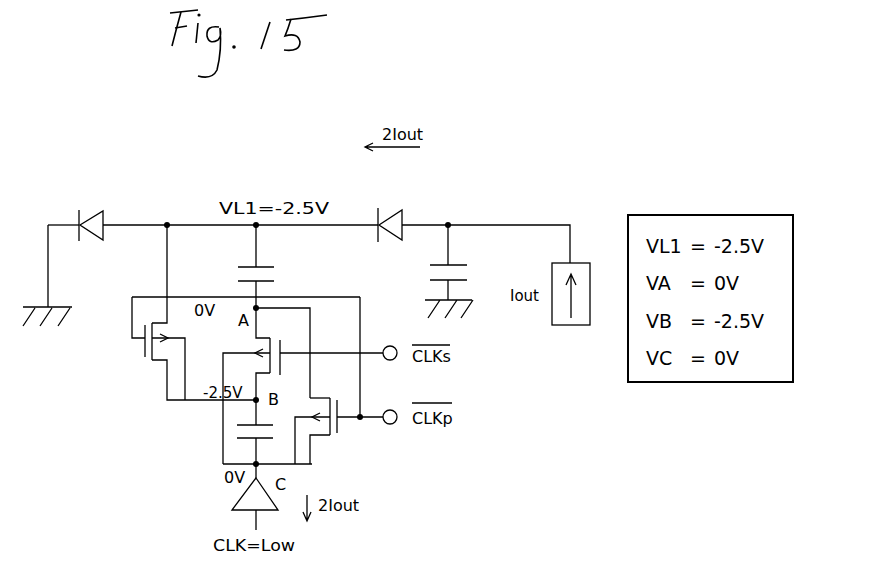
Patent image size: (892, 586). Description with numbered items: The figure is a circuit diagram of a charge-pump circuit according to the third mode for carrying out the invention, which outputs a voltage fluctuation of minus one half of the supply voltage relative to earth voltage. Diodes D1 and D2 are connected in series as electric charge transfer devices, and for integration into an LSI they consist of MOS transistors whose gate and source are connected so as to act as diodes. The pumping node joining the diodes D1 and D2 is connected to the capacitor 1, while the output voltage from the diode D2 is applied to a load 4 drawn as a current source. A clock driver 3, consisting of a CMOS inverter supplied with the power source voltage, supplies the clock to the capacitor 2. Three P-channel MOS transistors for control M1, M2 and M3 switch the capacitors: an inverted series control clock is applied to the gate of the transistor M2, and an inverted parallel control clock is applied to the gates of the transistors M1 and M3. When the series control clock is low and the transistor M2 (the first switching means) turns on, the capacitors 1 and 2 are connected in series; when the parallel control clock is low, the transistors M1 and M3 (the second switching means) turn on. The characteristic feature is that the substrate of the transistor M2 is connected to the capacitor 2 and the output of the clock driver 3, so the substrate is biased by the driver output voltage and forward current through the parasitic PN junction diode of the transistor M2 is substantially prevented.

The capacitor 1 is at (281, 272).
The capacitor 2 is at (236, 434).
The clock driver 3 is at (236, 497).
The load 4 is at (566, 333).
The diode D1 is at (101, 201).
The diode D2 is at (394, 201).
The MOS transistor for control M1 is at (194, 312).
The MOS transistor for control M2 is at (303, 386).
The MOS transistor for control M3 is at (339, 380).